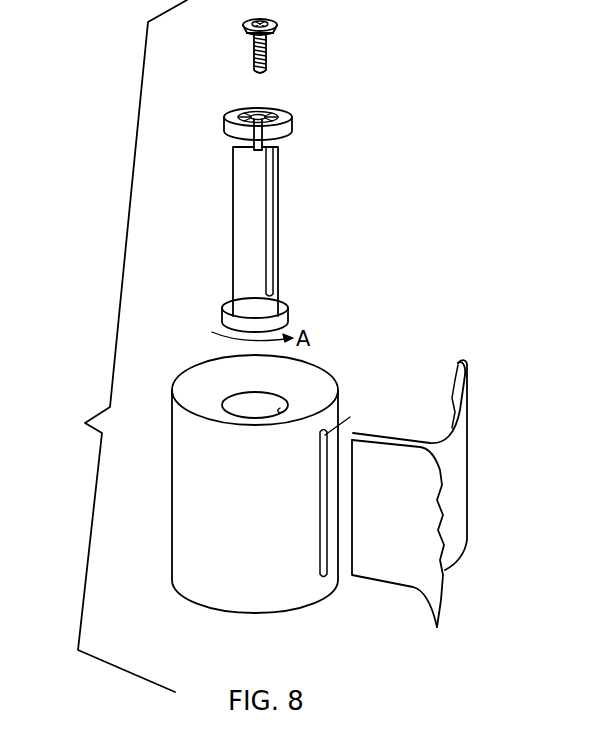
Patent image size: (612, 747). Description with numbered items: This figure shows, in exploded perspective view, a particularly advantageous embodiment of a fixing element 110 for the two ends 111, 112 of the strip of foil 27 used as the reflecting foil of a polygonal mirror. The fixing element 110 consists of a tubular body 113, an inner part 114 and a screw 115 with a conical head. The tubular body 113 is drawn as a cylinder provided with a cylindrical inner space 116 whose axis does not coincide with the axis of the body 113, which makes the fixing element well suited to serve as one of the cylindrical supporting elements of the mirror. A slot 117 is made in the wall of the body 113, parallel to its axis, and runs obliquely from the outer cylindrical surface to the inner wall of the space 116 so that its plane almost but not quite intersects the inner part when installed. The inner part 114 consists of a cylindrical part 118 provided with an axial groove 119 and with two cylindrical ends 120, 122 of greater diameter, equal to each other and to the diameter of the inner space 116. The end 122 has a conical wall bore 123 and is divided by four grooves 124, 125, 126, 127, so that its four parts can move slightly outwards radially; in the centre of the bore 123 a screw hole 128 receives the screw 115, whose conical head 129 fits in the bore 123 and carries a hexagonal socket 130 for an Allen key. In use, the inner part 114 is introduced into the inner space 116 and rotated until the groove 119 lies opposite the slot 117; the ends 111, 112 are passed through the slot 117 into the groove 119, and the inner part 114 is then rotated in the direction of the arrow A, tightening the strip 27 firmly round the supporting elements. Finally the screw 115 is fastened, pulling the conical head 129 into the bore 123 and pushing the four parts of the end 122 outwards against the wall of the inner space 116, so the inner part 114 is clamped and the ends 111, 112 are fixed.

The strip of foil 27 is at (436, 494).
The fixing element 110 is at (400, 238).
The end of the strip of foil 111 is at (376, 574).
The end of the strip of foil 112 is at (378, 432).
The tubular body 113 is at (250, 478).
The inner part 114 is at (250, 239).
The screw 115 is at (263, 38).
The cylindrical inner space 116 is at (237, 404).
The slot 117 is at (280, 408).
The cylindrical part 118 is at (257, 231).
The axial groove 119 is at (275, 188).
The end 120 is at (288, 310).
The end 122 is at (268, 117).
The conical wall bore 123 is at (263, 110).
The groove 124 is at (292, 125).
The groove 125 is at (262, 110).
The groove 126 is at (232, 118).
The groove 127 is at (254, 147).
The screw hole 128 is at (252, 110).
The conical head 129 is at (278, 26).
The hexagonal socket 130 is at (258, 22).